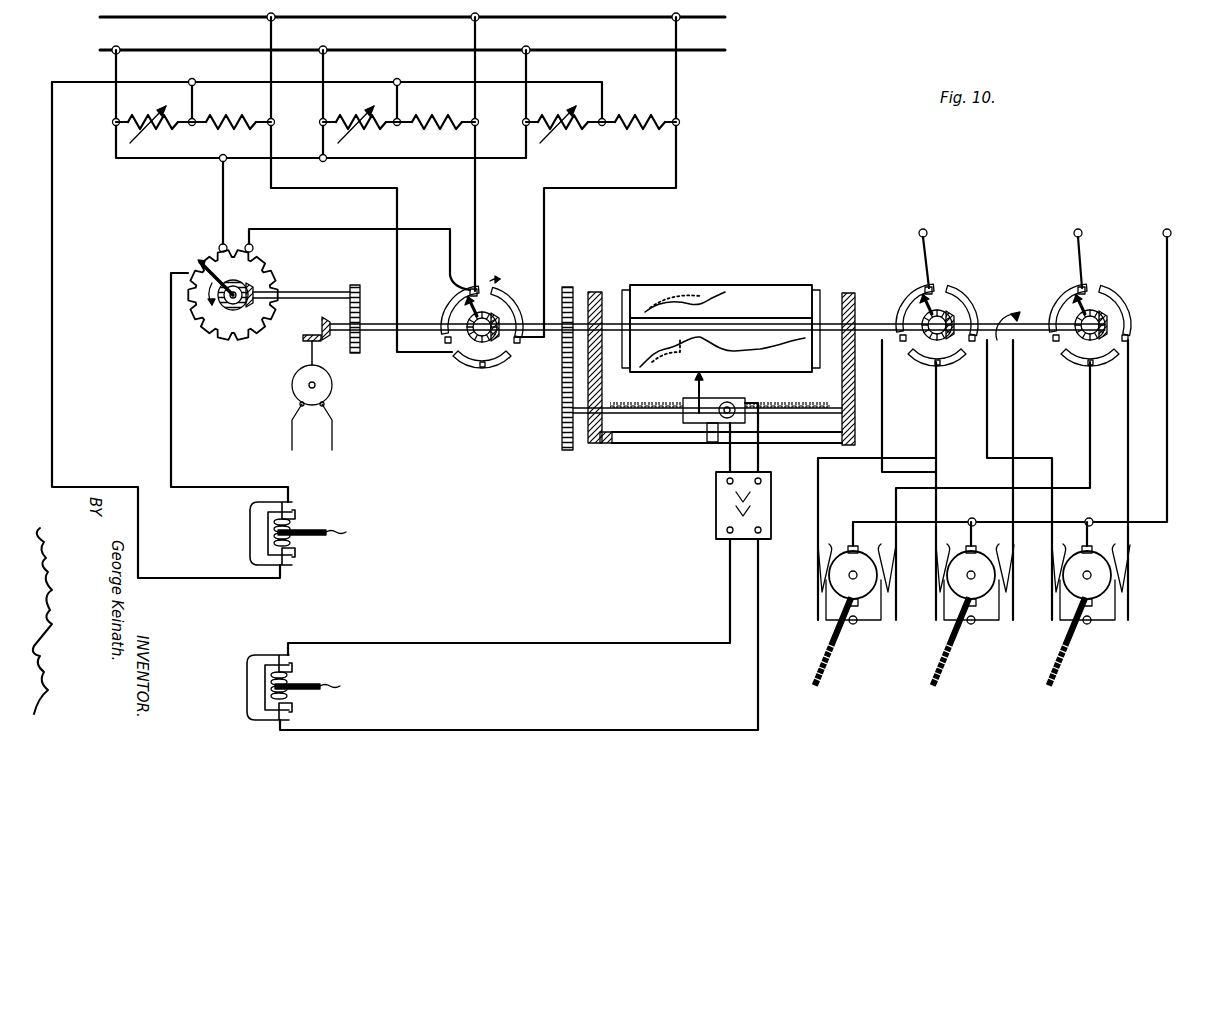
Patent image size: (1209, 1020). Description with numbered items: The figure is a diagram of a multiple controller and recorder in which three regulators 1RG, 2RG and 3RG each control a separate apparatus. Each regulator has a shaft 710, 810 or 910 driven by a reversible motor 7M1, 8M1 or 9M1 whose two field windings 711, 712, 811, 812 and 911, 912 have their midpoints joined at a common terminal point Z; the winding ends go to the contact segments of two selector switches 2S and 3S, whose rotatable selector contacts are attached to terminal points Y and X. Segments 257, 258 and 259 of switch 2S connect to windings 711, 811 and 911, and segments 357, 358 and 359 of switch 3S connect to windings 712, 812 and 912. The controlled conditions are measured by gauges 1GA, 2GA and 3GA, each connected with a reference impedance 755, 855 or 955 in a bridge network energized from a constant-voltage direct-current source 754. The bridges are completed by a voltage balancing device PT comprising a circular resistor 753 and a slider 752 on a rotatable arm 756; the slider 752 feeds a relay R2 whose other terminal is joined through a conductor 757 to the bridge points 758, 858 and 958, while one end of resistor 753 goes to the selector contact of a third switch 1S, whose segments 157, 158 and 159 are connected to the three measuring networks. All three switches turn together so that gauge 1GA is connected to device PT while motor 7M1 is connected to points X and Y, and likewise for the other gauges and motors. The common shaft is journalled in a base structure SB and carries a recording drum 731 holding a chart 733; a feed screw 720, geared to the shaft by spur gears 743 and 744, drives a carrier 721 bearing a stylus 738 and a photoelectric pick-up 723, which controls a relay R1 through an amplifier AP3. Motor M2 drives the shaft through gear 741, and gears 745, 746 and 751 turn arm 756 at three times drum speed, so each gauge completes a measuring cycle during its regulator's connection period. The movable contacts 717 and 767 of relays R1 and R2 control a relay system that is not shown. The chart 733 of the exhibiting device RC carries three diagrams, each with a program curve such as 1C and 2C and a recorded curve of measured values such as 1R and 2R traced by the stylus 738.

The direct-current source 754 is at (725, 17).
The reference impedance 755 is at (247, 117).
The bridge point 758 is at (196, 128).
The reference impedance 855 is at (454, 117).
The bridge point 858 is at (401, 128).
The reference impedance 955 is at (657, 117).
The bridge point 958 is at (606, 128).
The gauge 1GA is at (154, 126).
The gauge 2GA is at (360, 126).
The gauge 3GA is at (564, 126).
The conductor 757 is at (52, 243).
The slider 752 is at (196, 254).
The rotatable arm 756 is at (248, 284).
The gear 751 is at (232, 313).
The circular resistor 753 is at (215, 345).
The voltage balancing device PT is at (220, 309).
The gear 746 is at (362, 294).
The gear 741 is at (318, 327).
The gear 745 is at (358, 353).
The motor M2 is at (292, 387).
The selector switch 1S is at (483, 327).
The contact segment 158 is at (452, 306).
The contact segment 159 is at (517, 345).
The contact segment 157 is at (482, 362).
The spur gear 744 is at (582, 273).
The spur gear 743 is at (560, 444).
The recording drum 731 is at (608, 278).
The recording chart 733 is at (770, 290).
The recorded curve 1R is at (680, 292).
The program curve 1C is at (725, 292).
The recorded curve 2R is at (661, 348).
The program curve 2C is at (763, 339).
The stylus 738 is at (695, 383).
The carrier 721 is at (683, 400).
The photoelectric tube 723 is at (735, 404).
The exhibiting device RC is at (730, 407).
The feed screw 720 is at (650, 414).
The supporting structure SB is at (612, 445).
The amplifier AP3 is at (716, 537).
The relay R2 is at (286, 533).
The movable contact member 767 is at (318, 521).
The relay R1 is at (281, 687).
The movable contact member 717 is at (312, 676).
The terminal point Y is at (919, 232).
The terminal point X is at (1074, 232).
The terminal point Z is at (1163, 232).
The selector switch 2S is at (939, 326).
The contact segment 258 is at (910, 300).
The contact segment 259 is at (968, 292).
The contact segment 257 is at (930, 370).
The selector switch 3S is at (1093, 326).
The contact segment 358 is at (1062, 296).
The contact segment 359 is at (1122, 296).
The contact segment 357 is at (1083, 370).
The field winding 711 is at (834, 563).
The field winding 712 is at (880, 563).
The reversible motor 7M1 is at (873, 573).
The regulator shaft 710 is at (847, 641).
The regulator 1RG is at (866, 612).
The field winding 811 is at (952, 563).
The field winding 812 is at (998, 563).
The reversible motor 8M1 is at (991, 573).
The regulator shaft 810 is at (965, 641).
The regulator 2RG is at (984, 612).
The field winding 911 is at (1068, 563).
The field winding 912 is at (1114, 563).
The reversible motor 9M1 is at (1107, 573).
The regulator shaft 910 is at (1081, 641).
The regulator 3RG is at (1100, 612).